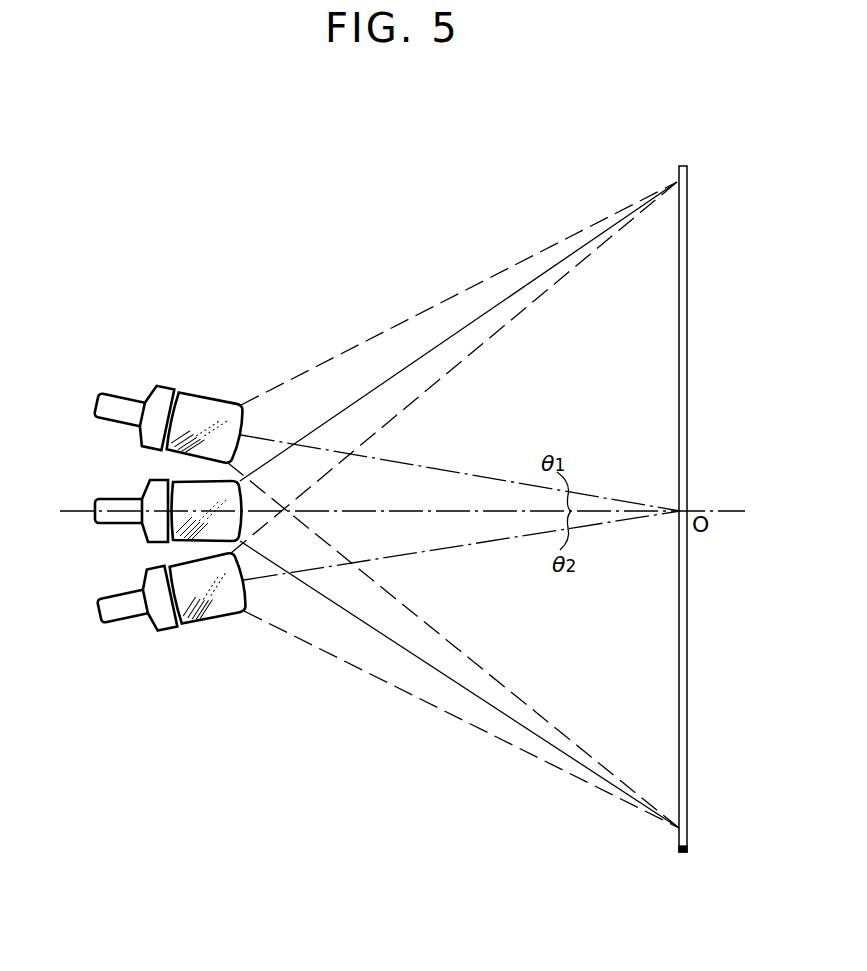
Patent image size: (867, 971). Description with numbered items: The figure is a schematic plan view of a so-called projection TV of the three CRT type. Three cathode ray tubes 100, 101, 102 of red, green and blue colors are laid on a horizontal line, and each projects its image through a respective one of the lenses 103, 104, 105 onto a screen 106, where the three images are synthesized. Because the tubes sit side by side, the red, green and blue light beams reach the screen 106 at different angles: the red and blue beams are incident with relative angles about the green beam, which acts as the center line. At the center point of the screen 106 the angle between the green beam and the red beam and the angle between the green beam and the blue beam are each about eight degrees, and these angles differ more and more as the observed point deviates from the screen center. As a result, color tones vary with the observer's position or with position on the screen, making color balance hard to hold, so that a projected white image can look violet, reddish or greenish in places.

The cathode ray tube 100 is at (116, 397).
The cathode ray tube 101 is at (116, 500).
The cathode ray tube 102 is at (132, 608).
The lens 103 is at (210, 400).
The lens 104 is at (208, 535).
The lens 105 is at (233, 602).
The screen 106 is at (688, 353).